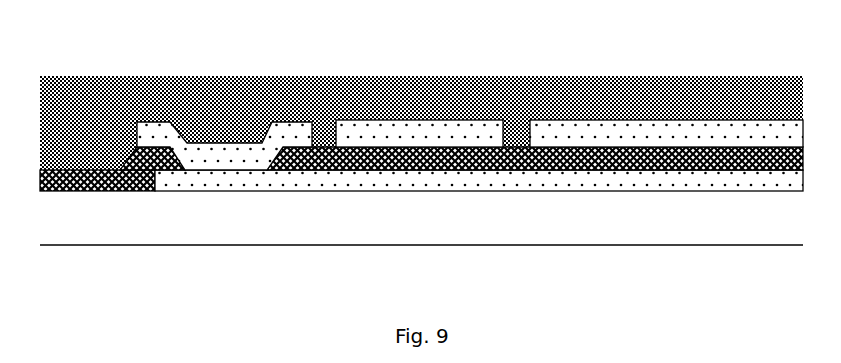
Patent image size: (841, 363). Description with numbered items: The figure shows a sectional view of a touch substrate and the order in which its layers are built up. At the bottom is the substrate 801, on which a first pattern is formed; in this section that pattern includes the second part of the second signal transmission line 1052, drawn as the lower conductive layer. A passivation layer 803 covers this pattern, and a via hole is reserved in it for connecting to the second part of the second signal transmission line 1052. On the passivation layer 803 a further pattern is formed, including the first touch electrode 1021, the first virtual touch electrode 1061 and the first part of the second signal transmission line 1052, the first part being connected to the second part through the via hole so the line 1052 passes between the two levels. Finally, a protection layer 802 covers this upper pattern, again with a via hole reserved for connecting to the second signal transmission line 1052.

The substrate 801 is at (70, 217).
The protection layer 802 is at (328, 100).
The passivation layer 803 is at (500, 157).
The second signal transmission line 1052 is at (200, 157).
The first virtual touch electrode 1061 is at (460, 132).
The first touch electrode 1021 is at (592, 138).